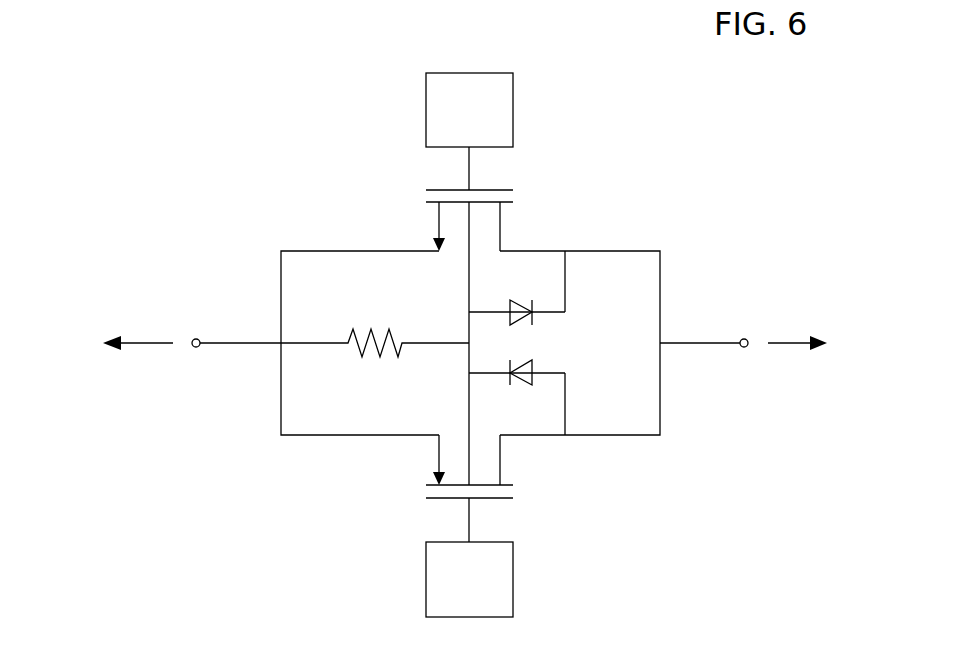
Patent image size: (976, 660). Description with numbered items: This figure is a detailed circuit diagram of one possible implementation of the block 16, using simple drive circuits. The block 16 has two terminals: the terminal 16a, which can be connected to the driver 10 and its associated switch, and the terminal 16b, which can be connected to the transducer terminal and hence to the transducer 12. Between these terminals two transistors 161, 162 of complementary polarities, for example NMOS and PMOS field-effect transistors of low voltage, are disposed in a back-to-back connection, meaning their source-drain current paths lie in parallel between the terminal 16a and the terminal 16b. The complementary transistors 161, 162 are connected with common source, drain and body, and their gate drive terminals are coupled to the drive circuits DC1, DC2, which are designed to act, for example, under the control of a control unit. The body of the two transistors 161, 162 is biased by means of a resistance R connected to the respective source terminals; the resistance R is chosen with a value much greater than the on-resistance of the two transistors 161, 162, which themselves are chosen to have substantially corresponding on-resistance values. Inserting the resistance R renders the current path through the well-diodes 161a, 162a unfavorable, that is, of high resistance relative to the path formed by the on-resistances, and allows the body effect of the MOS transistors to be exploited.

The block 16 is at (228, 161).
The terminal 16a is at (196, 326).
The terminal 16b is at (745, 326).
The transistor 161 is at (528, 190).
The transistor 162 is at (528, 506).
The well-diode 161a is at (540, 283).
The well-diode 162a is at (535, 383).
The resistance R is at (376, 326).
The drive circuit DC1 is at (426, 108).
The drive circuit DC2 is at (437, 593).
The driver 10 is at (101, 344).
The transducer 12 is at (852, 344).